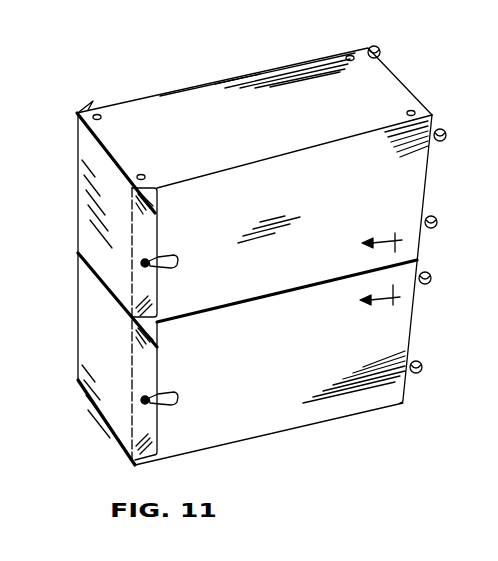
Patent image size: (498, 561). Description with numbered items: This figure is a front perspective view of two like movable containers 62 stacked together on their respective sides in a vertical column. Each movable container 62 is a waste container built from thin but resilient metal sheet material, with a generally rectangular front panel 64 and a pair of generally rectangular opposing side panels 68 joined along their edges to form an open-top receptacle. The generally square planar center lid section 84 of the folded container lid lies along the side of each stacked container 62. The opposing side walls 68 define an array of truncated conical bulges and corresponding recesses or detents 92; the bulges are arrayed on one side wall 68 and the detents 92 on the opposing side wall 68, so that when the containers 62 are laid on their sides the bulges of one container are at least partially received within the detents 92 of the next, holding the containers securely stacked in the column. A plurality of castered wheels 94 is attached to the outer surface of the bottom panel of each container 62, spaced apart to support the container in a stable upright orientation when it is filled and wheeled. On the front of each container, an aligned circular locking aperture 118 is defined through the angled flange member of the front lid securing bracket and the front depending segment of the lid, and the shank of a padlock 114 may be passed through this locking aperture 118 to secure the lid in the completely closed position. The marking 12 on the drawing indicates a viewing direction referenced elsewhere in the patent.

The section line direction arrow 12 is at (385, 269).
The movable container 62 is at (272, 238).
The front panel 64 is at (300, 204).
The side panel 68 is at (176, 101).
The center lid section 84 is at (82, 163).
The detents 92 is at (97, 113).
The castered wheels 94 is at (385, 50).
The padlock 114 is at (180, 254).
The locking aperture 118 is at (150, 268).